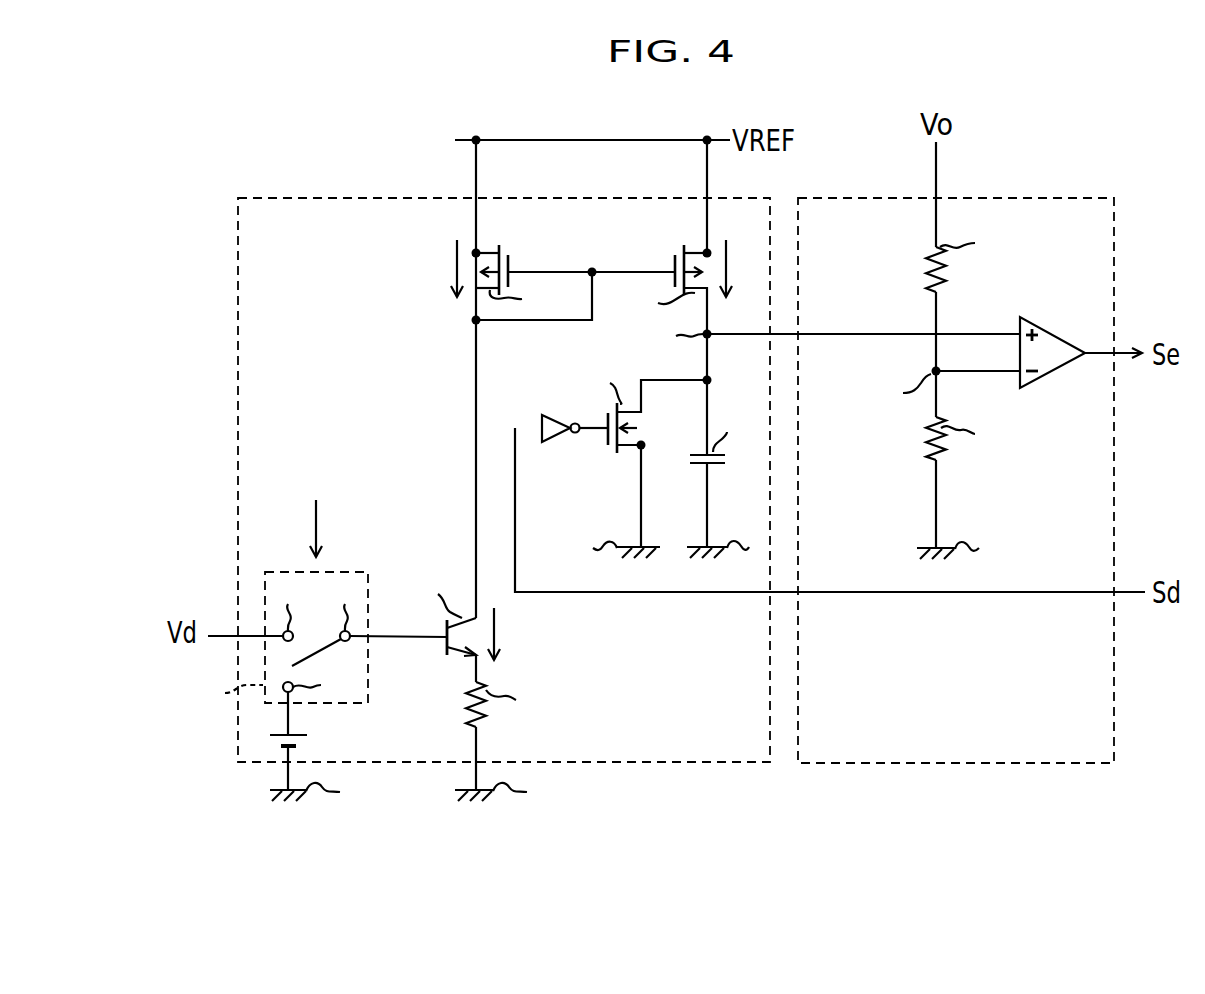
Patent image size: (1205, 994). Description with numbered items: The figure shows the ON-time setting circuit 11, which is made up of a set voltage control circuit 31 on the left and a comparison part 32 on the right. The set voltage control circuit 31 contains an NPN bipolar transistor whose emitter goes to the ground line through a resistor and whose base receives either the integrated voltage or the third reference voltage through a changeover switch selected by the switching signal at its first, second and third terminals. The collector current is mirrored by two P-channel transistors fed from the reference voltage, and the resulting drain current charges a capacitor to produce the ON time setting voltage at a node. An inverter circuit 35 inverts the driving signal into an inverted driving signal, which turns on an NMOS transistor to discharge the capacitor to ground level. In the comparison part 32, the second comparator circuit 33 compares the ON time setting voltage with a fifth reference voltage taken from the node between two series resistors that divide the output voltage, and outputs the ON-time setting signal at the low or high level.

The ON-time setting circuit 11 is at (629, 534).
The set voltage control circuit 31 is at (582, 514).
The comparison part 32 is at (947, 514).
The second comparator circuit 33 is at (1057, 330).
The inverter circuit 35 is at (545, 416).